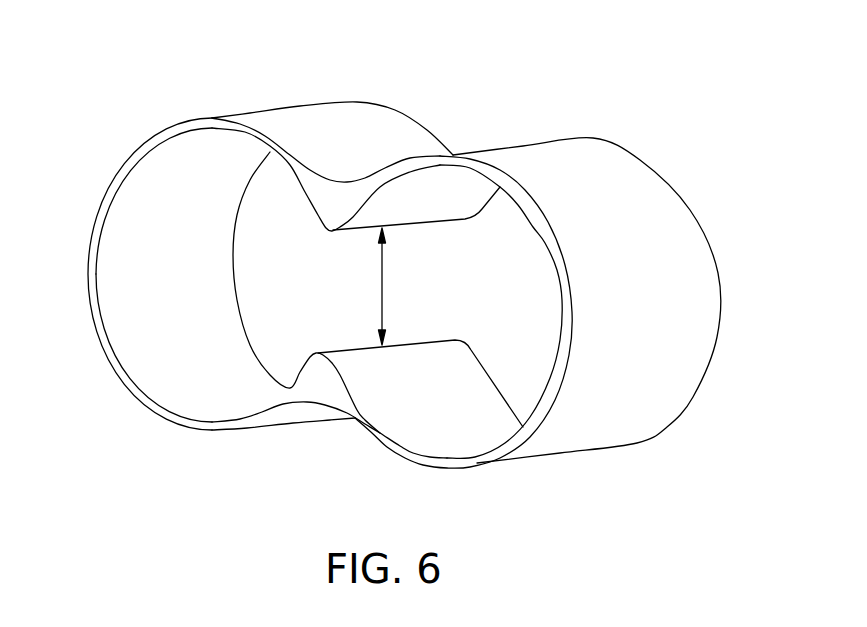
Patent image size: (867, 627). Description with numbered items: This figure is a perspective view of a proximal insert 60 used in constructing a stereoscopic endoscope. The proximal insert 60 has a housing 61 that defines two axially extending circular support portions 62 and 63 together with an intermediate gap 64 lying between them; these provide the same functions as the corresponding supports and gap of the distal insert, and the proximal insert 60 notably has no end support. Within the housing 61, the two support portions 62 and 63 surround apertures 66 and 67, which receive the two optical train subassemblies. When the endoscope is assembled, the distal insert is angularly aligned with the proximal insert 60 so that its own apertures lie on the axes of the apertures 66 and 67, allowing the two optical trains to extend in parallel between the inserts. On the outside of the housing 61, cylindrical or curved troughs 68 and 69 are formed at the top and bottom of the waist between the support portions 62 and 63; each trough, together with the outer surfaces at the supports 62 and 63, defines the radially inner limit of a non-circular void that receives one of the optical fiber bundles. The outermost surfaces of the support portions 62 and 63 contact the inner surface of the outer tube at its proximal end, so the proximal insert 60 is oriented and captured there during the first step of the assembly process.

The proximal insert 60 is at (680, 119).
The housing 61 is at (87, 265).
The circular support portion 62 is at (153, 215).
The circular support portion 63 is at (667, 375).
The intermediate gap 64 is at (363, 415).
The aperture 66 is at (193, 363).
The aperture 67 is at (520, 375).
The curved trough 68 is at (318, 403).
The curved trough 69 is at (413, 152).